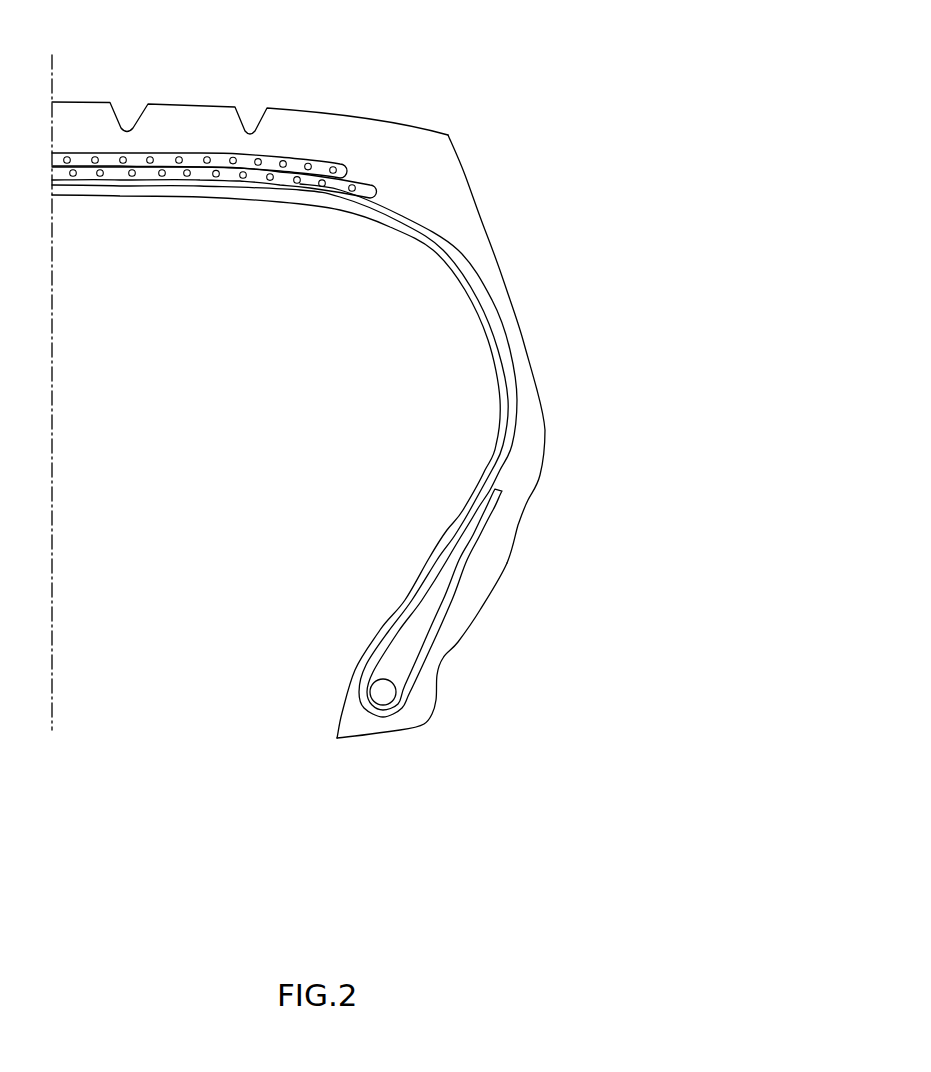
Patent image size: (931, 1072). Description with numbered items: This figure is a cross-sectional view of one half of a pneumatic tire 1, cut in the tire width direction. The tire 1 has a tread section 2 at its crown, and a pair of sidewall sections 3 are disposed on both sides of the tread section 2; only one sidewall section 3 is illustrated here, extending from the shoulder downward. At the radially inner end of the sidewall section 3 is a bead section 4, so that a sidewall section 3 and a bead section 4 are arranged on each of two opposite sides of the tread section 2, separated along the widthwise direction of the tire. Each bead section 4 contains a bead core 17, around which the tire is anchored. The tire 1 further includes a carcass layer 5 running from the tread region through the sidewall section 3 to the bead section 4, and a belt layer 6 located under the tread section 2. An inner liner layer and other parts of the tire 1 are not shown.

The tire 1 is at (512, 96).
The tread section 2 is at (437, 142).
The sidewall section 3 is at (537, 374).
The bead section 4 is at (431, 727).
The carcass layer 5 is at (482, 271).
The belt layer 6 is at (195, 160).
The bead core 17 is at (383, 697).